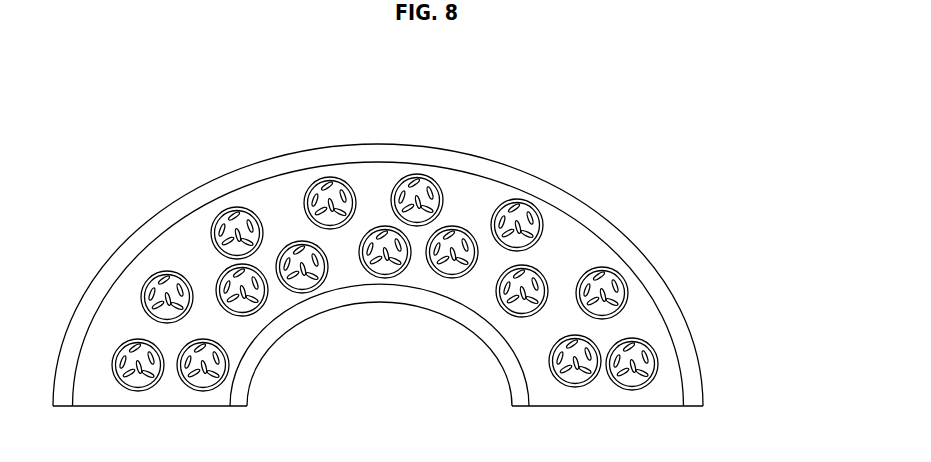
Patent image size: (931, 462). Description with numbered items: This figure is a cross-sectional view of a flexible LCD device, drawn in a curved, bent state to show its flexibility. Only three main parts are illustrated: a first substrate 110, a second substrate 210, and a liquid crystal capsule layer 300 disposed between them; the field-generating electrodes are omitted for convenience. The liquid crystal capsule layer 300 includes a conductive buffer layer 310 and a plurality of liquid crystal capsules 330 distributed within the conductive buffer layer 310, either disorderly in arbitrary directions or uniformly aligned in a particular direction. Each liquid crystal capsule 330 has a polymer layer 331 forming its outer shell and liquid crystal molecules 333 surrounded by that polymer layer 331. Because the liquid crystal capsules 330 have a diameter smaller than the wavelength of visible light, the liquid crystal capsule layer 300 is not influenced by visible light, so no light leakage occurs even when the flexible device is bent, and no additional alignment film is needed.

The first substrate 110 is at (493, 352).
The second substrate 210 is at (699, 367).
The liquid crystal capsule layer 300 is at (692, 138).
The conductive buffer layer 310 is at (653, 313).
The liquid crystal capsule 330 is at (727, 176).
The polymer layer 331 is at (628, 291).
The liquid crystal molecules 333 is at (613, 280).